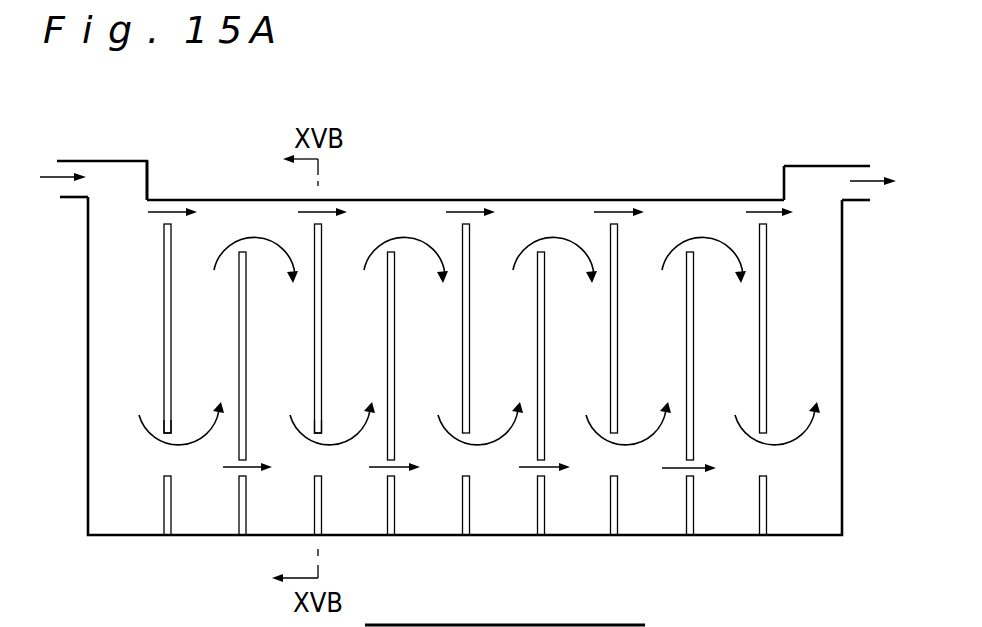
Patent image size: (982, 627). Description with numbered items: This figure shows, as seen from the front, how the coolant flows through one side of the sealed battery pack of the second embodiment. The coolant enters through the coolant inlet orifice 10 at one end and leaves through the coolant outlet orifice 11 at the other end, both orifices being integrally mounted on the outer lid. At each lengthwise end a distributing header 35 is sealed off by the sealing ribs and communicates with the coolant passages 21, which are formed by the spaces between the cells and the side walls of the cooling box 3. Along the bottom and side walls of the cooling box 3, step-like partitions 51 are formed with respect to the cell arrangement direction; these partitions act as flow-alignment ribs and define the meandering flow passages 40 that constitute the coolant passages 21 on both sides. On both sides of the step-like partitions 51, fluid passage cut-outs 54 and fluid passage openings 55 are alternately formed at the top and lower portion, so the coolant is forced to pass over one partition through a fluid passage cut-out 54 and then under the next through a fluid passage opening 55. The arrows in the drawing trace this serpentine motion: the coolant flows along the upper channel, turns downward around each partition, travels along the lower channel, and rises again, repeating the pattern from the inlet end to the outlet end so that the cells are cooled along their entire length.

The cooling box 3 is at (82, 411).
The coolant inlet orifice 10 is at (65, 163).
The coolant outlet orifice 11 is at (857, 177).
The distributing header 35 is at (113, 185).
The fluid passage cut-out 54 is at (244, 250).
The fluid passage opening 55 is at (166, 456).
The step-like partition 51 is at (165, 502).
The meandering flow passage 40 is at (297, 357).
The coolant passage 21 is at (434, 494).